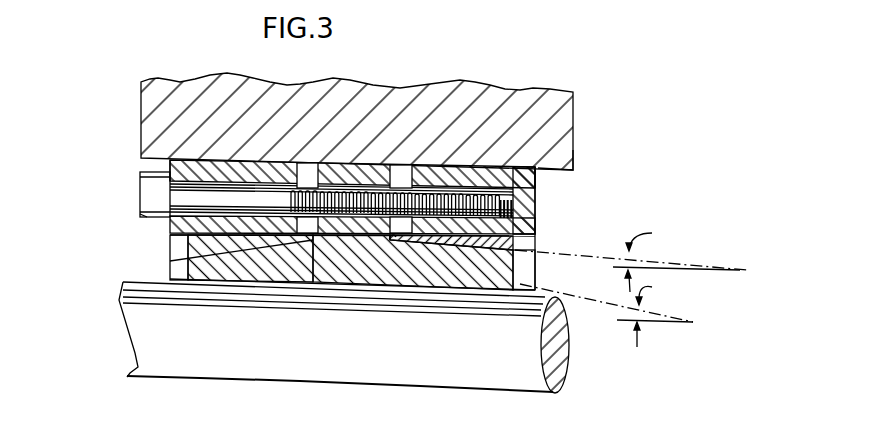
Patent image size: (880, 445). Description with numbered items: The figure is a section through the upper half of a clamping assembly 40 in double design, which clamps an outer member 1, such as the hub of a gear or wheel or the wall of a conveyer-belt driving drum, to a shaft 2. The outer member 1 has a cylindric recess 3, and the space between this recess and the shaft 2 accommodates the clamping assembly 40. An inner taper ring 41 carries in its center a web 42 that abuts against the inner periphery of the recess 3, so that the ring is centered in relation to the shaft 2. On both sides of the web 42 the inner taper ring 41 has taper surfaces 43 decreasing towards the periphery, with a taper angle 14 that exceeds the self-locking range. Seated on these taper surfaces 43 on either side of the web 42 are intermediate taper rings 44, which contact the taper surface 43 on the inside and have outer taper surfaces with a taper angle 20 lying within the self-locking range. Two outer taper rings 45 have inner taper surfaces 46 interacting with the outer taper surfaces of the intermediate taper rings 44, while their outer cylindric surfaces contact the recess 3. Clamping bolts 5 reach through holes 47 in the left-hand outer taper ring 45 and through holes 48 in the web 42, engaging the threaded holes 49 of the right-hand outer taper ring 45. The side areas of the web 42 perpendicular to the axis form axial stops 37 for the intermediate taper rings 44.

The outer member 1 is at (557, 122).
The shaft 2 is at (147, 312).
The cylindric recess 3 is at (557, 172).
The clamping bolt 5 is at (147, 216).
The taper angle 14 is at (606, 309).
The taper angle 20 is at (631, 252).
The axial stop 37 is at (397, 242).
The clamping assembly 40 is at (619, 191).
The inner taper ring 41 is at (280, 266).
The web 42 is at (396, 188).
The taper surface 43 is at (208, 268).
The intermediate taper ring 44 is at (188, 259).
The outer taper ring 45 is at (172, 163).
The inner taper surface 46 is at (186, 236).
The hole 47 is at (204, 173).
The hole 48 is at (332, 192).
The threaded hole 49 is at (515, 192).